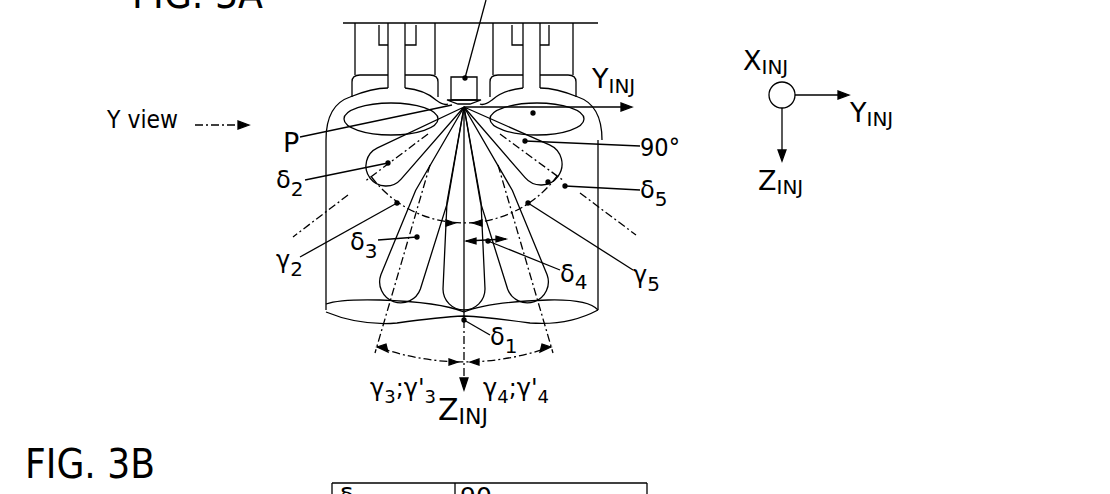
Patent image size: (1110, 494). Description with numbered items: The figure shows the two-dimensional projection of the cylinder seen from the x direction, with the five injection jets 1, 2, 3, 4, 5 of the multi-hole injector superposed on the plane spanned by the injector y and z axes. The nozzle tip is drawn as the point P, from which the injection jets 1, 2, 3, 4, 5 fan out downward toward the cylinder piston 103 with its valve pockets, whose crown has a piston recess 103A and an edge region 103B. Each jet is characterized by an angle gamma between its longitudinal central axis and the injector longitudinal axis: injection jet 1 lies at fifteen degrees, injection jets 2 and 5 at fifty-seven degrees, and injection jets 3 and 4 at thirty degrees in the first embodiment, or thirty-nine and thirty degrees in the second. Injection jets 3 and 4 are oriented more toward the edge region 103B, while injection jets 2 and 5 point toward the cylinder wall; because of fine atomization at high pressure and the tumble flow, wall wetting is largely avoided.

The injection jet 1 is at (464, 208).
The injection jet 2 is at (378, 172).
The injection jet 3 is at (419, 230).
The injection jet 4 is at (508, 230).
The injection jet 5 is at (550, 171).
The cylinder piston 103 is at (364, 359).
The piston recess 103A is at (442, 325).
The edge region 103B is at (345, 313).